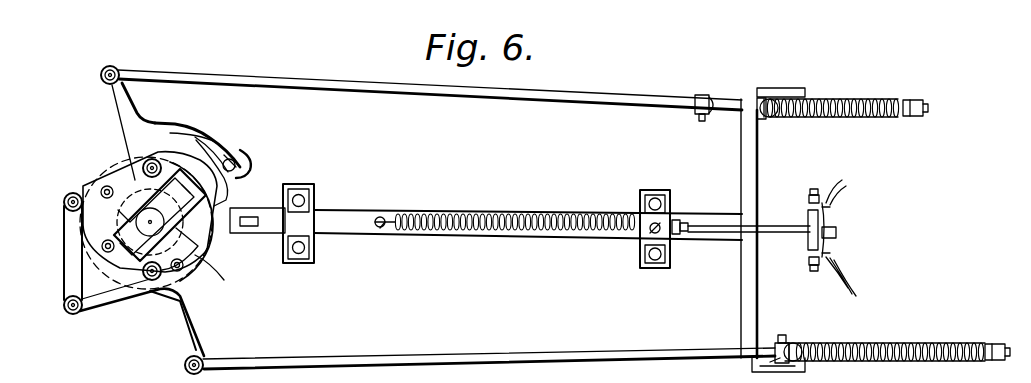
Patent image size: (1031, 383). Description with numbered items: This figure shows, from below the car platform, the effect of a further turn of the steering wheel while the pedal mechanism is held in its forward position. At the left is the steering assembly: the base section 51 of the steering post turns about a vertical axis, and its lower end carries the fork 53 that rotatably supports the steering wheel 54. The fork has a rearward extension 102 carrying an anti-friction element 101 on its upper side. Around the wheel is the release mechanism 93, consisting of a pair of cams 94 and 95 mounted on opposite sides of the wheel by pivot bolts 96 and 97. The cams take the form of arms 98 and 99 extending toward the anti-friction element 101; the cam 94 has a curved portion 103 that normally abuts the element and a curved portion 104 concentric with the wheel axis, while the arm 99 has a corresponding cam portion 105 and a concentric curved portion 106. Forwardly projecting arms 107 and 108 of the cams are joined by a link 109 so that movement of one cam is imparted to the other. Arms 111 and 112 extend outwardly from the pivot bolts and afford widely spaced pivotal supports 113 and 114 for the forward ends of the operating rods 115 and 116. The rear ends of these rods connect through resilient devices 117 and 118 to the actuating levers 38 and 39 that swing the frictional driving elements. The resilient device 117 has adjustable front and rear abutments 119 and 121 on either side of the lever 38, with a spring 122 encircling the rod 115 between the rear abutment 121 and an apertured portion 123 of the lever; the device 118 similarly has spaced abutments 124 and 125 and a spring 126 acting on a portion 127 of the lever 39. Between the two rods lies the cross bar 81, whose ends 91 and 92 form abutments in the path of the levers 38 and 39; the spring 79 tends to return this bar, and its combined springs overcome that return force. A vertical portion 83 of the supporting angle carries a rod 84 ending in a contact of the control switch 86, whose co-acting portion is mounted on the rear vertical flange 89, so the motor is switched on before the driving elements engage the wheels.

The actuating lever 38 is at (794, 345).
The operating lever 39 is at (786, 97).
The base section 51 is at (120, 222).
The fork 53 is at (146, 223).
The steering wheel 54 is at (160, 268).
The spring 79 is at (466, 242).
The cross bar 81 is at (741, 191).
The vertical portion 83 is at (676, 248).
The rod 84 is at (772, 226).
The control switch 86 is at (836, 232).
The rear vertical flange 89 is at (836, 246).
The end of cross bar 91 is at (741, 327).
The end of cross bar 92 is at (752, 96).
The release mechanism 93 is at (618, 106).
The cam 94 is at (200, 287).
The cam 95 is at (165, 130).
The pivot bolt 96 is at (158, 280).
The pivot bolt 97 is at (114, 168).
The arm 98 is at (196, 258).
The arm 99 is at (208, 142).
The anti-friction element 101 is at (222, 160).
The rearward extension 102 is at (222, 192).
The curved portion 103 is at (208, 238).
The curved portion 104 is at (288, 254).
The cam portion 105 is at (248, 172).
The curved portion 106 is at (236, 160).
The forwardly projecting arm 107 is at (108, 295).
The forwardly projecting arm 108 is at (78, 190).
The link 109 is at (62, 227).
The arm 111 is at (188, 320).
The arm 112 is at (118, 98).
The pivotal support 113 is at (204, 360).
The pivotal support 114 is at (115, 68).
The operating rod 115 is at (553, 357).
The operating rod 116 is at (512, 96).
The resilient device 117 is at (898, 343).
The resilient device 118 is at (900, 98).
The front abutment 119 is at (780, 335).
The rear abutment 121 is at (995, 342).
The spring 122 is at (914, 362).
The apertured portion 123 is at (808, 370).
The abutment 124 is at (700, 94).
The abutment 125 is at (912, 118).
The spring 126 is at (832, 98).
The portion of arm 39 127 is at (790, 90).